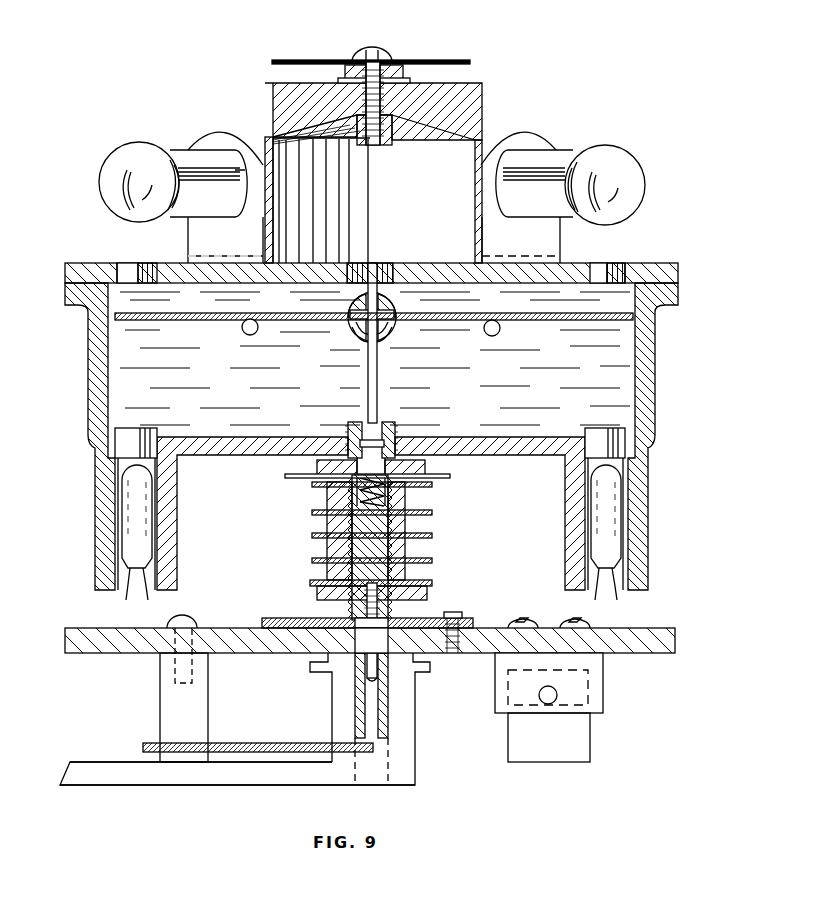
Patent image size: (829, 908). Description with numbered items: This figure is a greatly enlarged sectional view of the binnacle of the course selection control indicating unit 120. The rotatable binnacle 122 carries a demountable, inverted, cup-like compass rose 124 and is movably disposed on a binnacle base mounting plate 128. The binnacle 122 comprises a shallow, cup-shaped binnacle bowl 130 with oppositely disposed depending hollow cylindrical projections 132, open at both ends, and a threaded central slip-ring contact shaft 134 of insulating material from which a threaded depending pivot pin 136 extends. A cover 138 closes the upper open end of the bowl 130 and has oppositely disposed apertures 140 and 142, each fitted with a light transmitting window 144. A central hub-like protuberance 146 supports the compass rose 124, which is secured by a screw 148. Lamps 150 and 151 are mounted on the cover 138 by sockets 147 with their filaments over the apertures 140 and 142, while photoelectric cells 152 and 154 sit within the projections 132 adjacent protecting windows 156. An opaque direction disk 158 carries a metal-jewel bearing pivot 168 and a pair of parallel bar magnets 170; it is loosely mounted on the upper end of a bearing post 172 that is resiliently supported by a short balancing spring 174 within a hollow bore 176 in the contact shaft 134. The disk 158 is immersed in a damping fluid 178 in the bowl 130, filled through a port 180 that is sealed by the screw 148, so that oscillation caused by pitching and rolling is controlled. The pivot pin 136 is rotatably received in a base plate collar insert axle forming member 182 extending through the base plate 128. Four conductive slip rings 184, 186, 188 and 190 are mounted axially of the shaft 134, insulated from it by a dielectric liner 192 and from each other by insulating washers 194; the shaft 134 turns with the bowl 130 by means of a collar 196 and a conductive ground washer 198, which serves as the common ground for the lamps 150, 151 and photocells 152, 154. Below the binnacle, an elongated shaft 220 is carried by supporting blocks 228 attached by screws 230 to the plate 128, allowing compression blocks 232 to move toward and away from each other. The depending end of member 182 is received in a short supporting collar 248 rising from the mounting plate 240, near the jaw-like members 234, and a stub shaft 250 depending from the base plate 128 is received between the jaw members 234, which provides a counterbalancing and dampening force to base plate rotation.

The course selection control indicating unit 120 is at (650, 220).
The binnacle 122 is at (88, 352).
The compass rose 124 is at (322, 60).
The binnacle base mounting plate 128 is at (95, 653).
The binnacle bowl 130 is at (652, 390).
The hollow cylindrical projections 132 is at (95, 502).
The central slip-ring contact shaft 134 is at (335, 613).
The pivot pin 136 is at (355, 668).
The cover 138 is at (680, 273).
The aperture 140 is at (117, 270).
The aperture 142 is at (630, 270).
The light transmitting window 144 is at (142, 263).
The hub-like protuberance 146 is at (272, 105).
The sockets 147 is at (188, 150).
The screw 148 is at (392, 56).
The lamp 150 is at (118, 160).
The lamp 151 is at (625, 165).
The photoelectric cell 152 is at (128, 540).
The photoelectric cell 154 is at (592, 540).
The protecting windows 156 is at (150, 428).
The direction disk 158 is at (173, 320).
The metal-jewel bearing pivot 168 is at (372, 263).
The bar magnets 170 is at (242, 327).
The bearing post 172 is at (368, 403).
The balancing spring 174 is at (400, 502).
The hollow bore 176 is at (380, 425).
The damping fluid 178 is at (445, 290).
The port 180 is at (400, 148).
The base plate collar insert axle forming member 182 is at (380, 700).
The slip ring 184 is at (405, 506).
The slip ring 186 is at (420, 522).
The slip ring 188 is at (425, 546).
The slip ring 190 is at (425, 576).
The dielectric liner 192 is at (327, 572).
The insulating washers 194 is at (312, 536).
The collar 196 is at (427, 468).
The conductive ground washer 198 is at (290, 476).
The elongated shaft 220 is at (555, 693).
The supporting blocks 228 is at (603, 710).
The screws 230 is at (572, 626).
The compression blocks 232 is at (580, 748).
The jaw-like members 234 is at (306, 748).
The mounting plate 240 is at (243, 775).
The supporting collar 248 is at (415, 758).
The stub shaft 250 is at (160, 703).